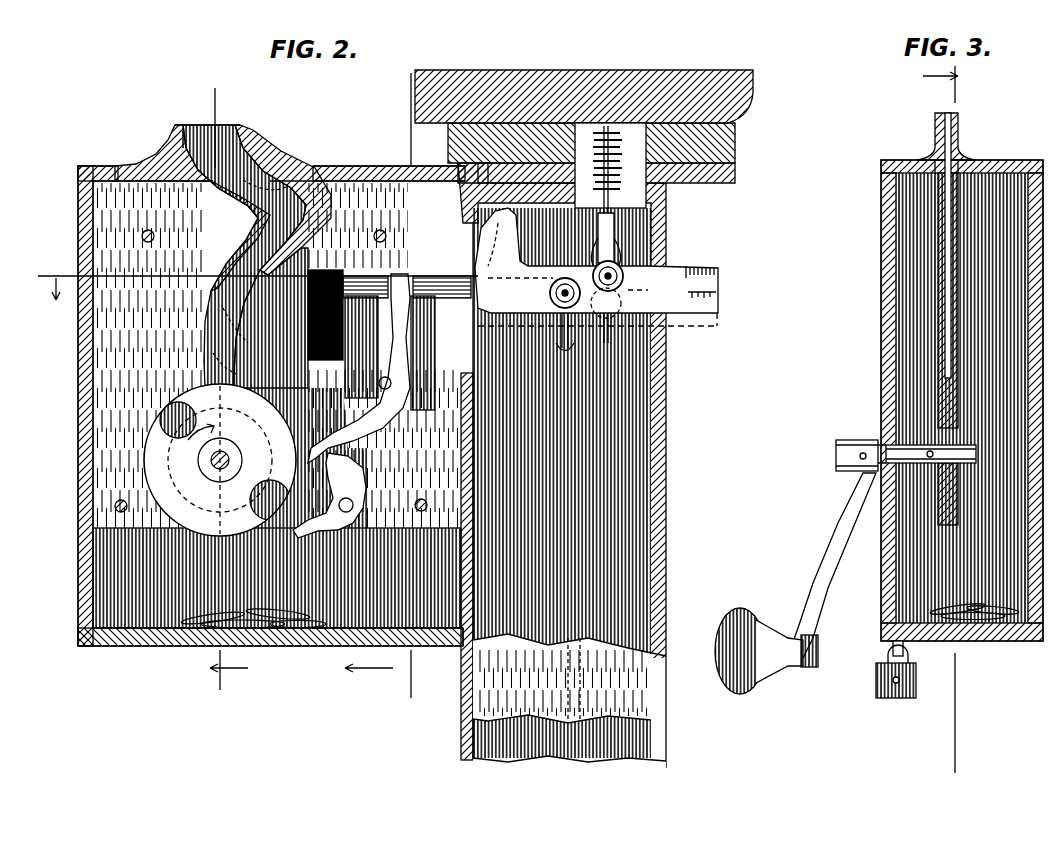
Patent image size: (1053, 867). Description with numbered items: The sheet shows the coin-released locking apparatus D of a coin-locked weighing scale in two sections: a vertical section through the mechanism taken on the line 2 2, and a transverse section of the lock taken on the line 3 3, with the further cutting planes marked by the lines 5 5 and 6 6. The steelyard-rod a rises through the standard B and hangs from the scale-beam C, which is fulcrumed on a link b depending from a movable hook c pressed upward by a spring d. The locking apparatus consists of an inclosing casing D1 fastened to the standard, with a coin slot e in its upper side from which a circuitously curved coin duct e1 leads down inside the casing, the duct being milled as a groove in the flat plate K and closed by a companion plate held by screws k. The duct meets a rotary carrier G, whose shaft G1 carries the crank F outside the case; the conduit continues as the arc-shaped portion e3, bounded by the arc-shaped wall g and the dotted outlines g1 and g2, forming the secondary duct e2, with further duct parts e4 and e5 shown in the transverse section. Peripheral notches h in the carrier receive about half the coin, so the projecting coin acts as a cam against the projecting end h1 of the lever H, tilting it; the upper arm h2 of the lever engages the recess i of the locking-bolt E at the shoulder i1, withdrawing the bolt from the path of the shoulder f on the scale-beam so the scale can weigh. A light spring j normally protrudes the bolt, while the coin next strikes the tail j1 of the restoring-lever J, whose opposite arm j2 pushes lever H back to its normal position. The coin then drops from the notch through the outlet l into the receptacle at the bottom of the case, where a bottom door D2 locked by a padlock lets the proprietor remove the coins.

In FIG. 2, the inclosing casing D1 is at (75, 536).
In FIG. 3, the door D2 is at (962, 416).
In FIG. 2, the coin-released locking apparatus D is at (400, 353).
In FIG. 2, the coin slot e is at (200, 116).
In FIG. 3, the coin slot e is at (944, 102).
In FIG. 2, the coin duct e1 is at (272, 192).
In FIG. 3, the coin duct e1 is at (930, 250).
In FIG. 2, the secondary coin duct e2 is at (237, 325).
In FIG. 3, the secondary coin duct e2 is at (950, 300).
In FIG. 3, the arc-shaped conduit portion e3 is at (945, 240).
In FIG. 3, the chute part e4 is at (930, 395).
In FIG. 3, the bolt e5 is at (968, 446).
In FIG. 2, the chute outlet l is at (224, 363).
In FIG. 2, the flat plate K is at (154, 246).
In FIG. 2, the screws k is at (146, 226).
In FIG. 2, the rotary carrier G is at (220, 460).
In FIG. 2, the wheel axle G1 is at (221, 452).
In FIG. 2, the arc-shaped duct wall g is at (283, 363).
In FIG. 2, the imaginary duct outline g1 is at (236, 464).
In FIG. 2, the duct outline g2 is at (311, 480).
In FIG. 2, the peripheral notches h is at (226, 447).
In FIG. 2, the projecting portion of lever h1 is at (320, 449).
In FIG. 2, the upper arm of lever h2 is at (392, 349).
In FIG. 2, the lever H is at (359, 368).
In FIG. 2, the restoring-lever J is at (329, 495).
In FIG. 2, the spring j is at (340, 320).
In FIG. 2, the tail of restoring-lever j1 is at (308, 533).
In FIG. 2, the opposite arm of restoring-lever j2 is at (334, 465).
In FIG. 2, the notch or recess i is at (442, 293).
In FIG. 2, the shoulder of recess i1 is at (365, 285).
In FIG. 2, the steelyard-rod a is at (588, 480).
In FIG. 2, the standard B is at (571, 470).
In FIG. 2, the scale-beam C is at (596, 267).
In FIG. 2, the locking-bolt E is at (450, 262).
In FIG. 2, the tooth or shoulder f is at (470, 236).
In FIG. 2, the link b is at (595, 289).
In FIG. 2, the hook c is at (592, 238).
In FIG. 2, the spring d is at (610, 165).
In FIG. 3, the crank F is at (845, 567).
In FIG. 3, the section line 2 2 is at (946, 415).
In FIG. 2, the section line 3 3 is at (225, 389).
In FIG. 2, the section line 5 5 is at (378, 380).
In FIG. 2, the section line 6 6 is at (271, 277).